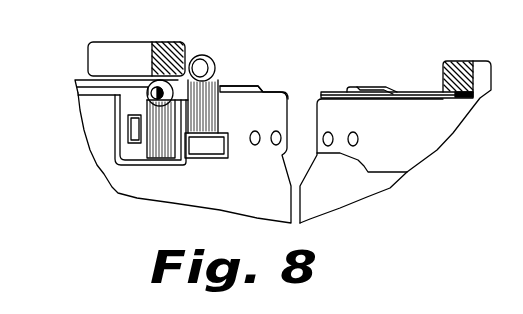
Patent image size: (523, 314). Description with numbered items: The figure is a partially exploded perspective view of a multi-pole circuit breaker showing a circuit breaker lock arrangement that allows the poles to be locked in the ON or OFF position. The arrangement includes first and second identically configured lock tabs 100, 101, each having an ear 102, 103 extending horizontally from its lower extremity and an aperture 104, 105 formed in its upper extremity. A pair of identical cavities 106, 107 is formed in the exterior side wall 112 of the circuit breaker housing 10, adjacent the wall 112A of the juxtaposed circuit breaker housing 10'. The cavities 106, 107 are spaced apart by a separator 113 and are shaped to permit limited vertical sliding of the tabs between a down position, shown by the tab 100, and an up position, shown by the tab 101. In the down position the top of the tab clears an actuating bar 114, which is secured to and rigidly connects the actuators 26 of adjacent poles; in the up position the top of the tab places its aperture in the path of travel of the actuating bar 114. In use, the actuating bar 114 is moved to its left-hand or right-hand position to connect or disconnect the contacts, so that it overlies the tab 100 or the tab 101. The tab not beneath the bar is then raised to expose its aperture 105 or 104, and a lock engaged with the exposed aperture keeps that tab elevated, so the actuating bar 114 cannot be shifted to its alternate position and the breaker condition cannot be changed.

The circuit breaker housing 10 is at (183, 151).
The juxtaposed circuit breaker housing 10' is at (395, 142).
The actuator 26 is at (112, 75).
The first lock tab 100 is at (155, 144).
The second lock tab 101 is at (206, 90).
The ear 102 is at (128, 166).
The ear 103 is at (267, 105).
The aperture 104 is at (148, 105).
The aperture 105 is at (215, 62).
The cavity 106 is at (136, 132).
The cavity 107 is at (204, 148).
The exterior side wall 112 is at (294, 105).
The wall 112A is at (401, 108).
The separator 113 is at (180, 160).
The actuating bar 114 is at (140, 48).